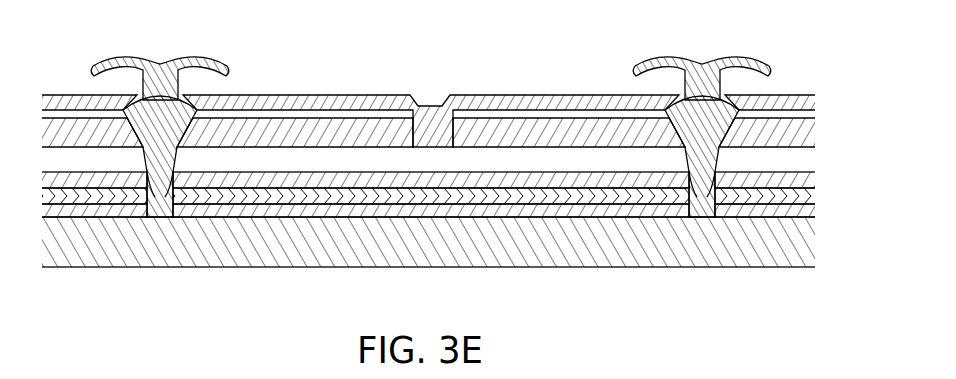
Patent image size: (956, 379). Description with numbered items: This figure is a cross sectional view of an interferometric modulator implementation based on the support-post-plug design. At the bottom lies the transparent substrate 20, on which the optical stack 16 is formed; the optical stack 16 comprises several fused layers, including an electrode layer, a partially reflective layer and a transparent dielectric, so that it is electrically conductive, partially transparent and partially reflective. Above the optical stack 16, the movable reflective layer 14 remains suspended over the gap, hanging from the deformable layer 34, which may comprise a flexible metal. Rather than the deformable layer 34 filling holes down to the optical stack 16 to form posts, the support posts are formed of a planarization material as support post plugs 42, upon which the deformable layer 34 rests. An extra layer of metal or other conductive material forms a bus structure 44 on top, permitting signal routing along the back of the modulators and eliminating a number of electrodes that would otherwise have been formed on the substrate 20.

The movable reflective layer 14 is at (370, 130).
The optical stack 16 is at (822, 172).
The transparent substrate 20 is at (547, 265).
The deformable layer 34 is at (478, 97).
The support post plug 42 is at (685, 138).
The bus structure 44 is at (133, 54).